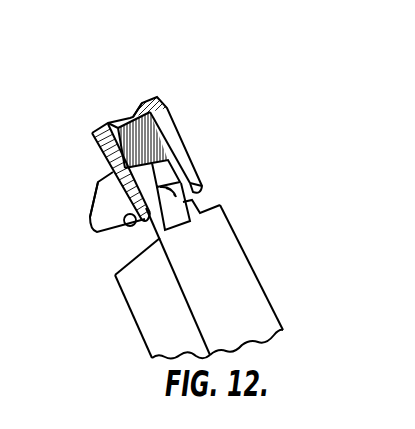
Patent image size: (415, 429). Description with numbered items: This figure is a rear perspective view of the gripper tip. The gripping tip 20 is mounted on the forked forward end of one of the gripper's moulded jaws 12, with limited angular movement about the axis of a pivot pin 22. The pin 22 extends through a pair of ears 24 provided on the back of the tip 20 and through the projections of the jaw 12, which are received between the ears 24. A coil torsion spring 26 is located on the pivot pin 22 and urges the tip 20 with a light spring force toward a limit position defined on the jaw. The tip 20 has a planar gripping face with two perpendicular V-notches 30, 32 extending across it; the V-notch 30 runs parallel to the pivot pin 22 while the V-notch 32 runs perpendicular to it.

The jaw 12 is at (266, 284).
The gripping tip 20 is at (150, 135).
The pivot pin 22 is at (126, 225).
The ears 24 is at (199, 176).
The coil torsion spring 26 is at (193, 200).
The V-notch 30 is at (98, 184).
The V-notch 32 is at (131, 117).